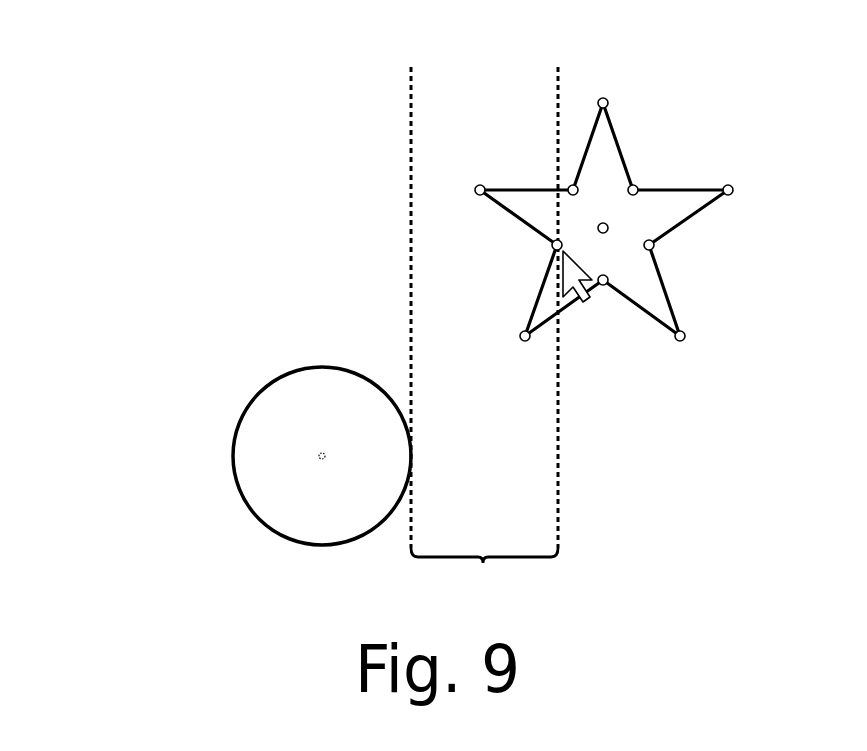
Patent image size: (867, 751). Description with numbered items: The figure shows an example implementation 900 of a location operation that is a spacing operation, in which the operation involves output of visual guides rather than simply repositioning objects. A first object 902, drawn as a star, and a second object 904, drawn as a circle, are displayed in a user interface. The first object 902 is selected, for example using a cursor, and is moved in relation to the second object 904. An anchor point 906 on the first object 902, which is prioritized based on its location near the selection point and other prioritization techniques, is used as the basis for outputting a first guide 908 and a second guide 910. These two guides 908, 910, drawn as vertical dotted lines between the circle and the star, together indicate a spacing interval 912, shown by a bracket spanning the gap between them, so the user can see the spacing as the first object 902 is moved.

The user interface view 900 is at (134, 62).
The first object 902 is at (622, 143).
The second object 904 is at (270, 533).
The anchor point 906 is at (554, 242).
The first guide 908 is at (410, 343).
The second guide 910 is at (559, 408).
The spacing interval 912 is at (483, 563).